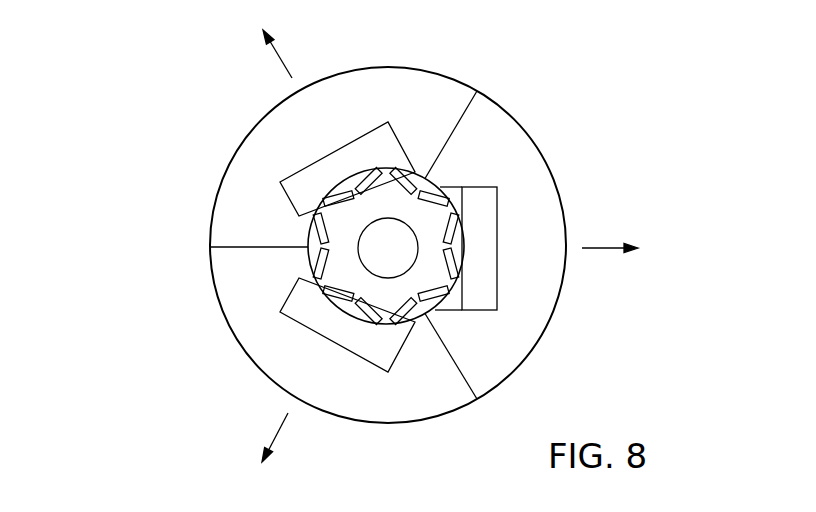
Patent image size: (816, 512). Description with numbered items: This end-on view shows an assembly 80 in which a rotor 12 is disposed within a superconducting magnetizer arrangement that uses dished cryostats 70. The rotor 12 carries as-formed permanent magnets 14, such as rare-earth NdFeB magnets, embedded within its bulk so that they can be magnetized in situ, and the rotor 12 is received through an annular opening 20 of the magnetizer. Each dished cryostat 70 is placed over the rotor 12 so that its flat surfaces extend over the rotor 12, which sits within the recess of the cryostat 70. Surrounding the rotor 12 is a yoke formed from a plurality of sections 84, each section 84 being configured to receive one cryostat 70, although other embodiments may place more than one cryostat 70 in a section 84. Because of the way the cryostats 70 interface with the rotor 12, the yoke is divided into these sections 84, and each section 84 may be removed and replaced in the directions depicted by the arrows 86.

The assembly 80 is at (350, 244).
The sections 84 is at (242, 145).
The rotor 12 is at (470, 204).
The permanent magnets 14 is at (435, 297).
The annular opening 20 is at (405, 322).
The dished cryostat 70 is at (498, 217).
The arrows 86 is at (282, 54).